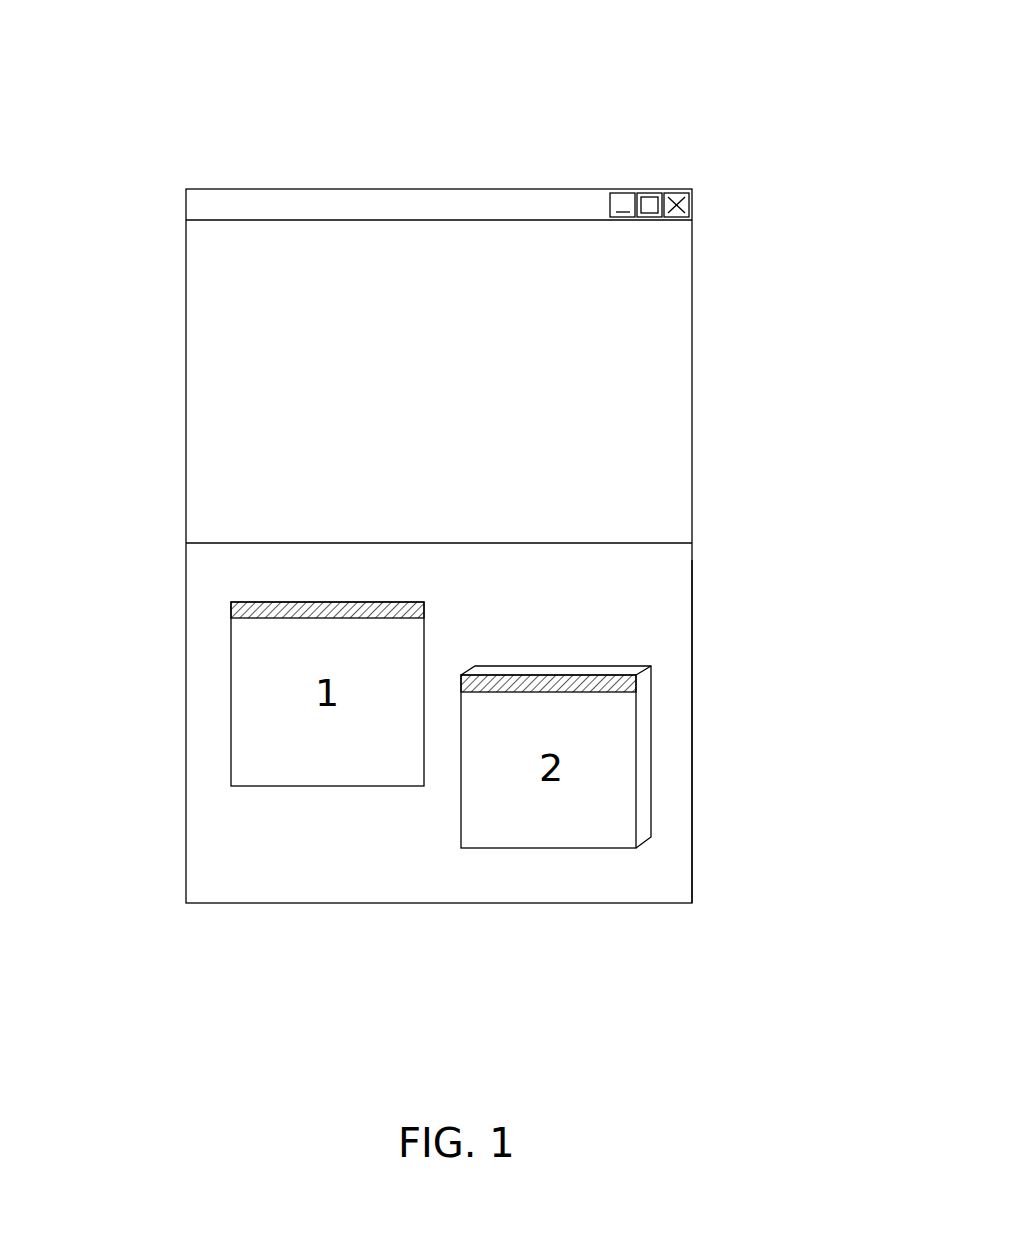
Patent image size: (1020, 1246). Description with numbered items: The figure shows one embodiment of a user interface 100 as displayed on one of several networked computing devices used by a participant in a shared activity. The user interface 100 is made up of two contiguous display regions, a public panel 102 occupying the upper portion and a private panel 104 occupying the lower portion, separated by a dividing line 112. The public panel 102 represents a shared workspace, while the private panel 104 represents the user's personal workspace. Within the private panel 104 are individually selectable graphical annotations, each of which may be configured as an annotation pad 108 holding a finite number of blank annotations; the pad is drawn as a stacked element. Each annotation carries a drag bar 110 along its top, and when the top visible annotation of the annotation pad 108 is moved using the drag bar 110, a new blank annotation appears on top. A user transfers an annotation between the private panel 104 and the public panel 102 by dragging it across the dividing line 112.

The user interface 100 is at (625, 97).
The public panel 102 is at (692, 275).
The private panel 104 is at (692, 722).
The annotation pad 108 is at (647, 815).
The drag bar 110 is at (273, 600).
The dividing line 112 is at (186, 543).